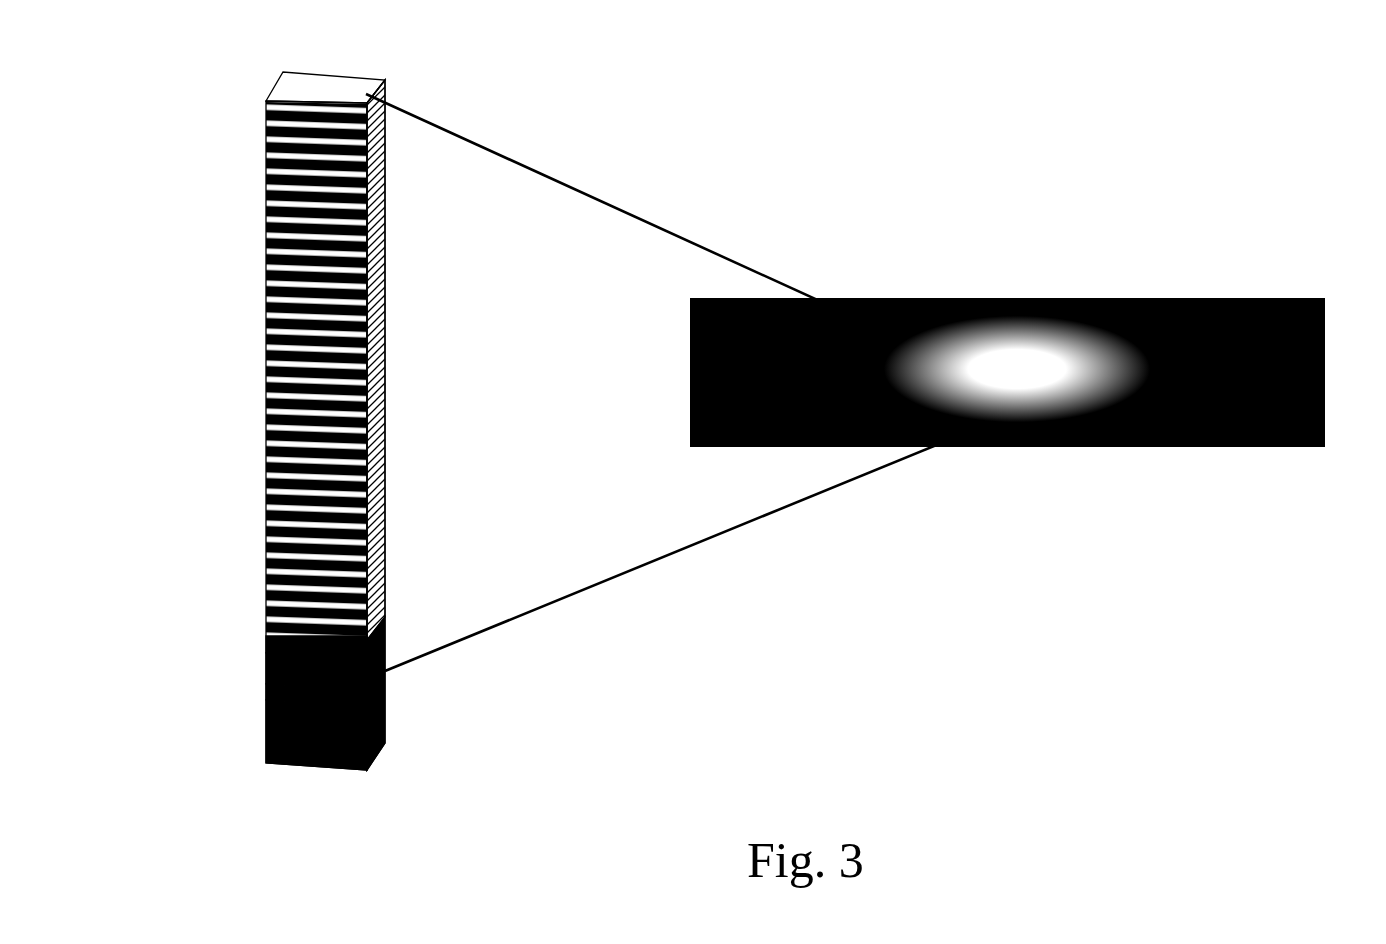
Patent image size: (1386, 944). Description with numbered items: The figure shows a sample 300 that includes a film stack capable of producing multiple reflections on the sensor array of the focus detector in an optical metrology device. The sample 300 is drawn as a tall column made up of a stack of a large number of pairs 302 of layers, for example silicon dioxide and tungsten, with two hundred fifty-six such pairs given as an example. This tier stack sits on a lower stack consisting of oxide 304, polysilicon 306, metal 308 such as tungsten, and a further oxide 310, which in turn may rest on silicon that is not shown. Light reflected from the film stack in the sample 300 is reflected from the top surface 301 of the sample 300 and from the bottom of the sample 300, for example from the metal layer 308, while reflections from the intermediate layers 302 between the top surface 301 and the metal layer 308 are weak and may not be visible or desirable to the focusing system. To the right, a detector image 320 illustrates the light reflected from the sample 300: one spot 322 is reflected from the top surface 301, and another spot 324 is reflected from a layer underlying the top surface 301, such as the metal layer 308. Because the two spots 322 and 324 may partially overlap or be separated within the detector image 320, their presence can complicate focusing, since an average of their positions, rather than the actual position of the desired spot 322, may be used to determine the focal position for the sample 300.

The sample 300 is at (194, 75).
The top surface 301 is at (323, 90).
The pairs of layers 302 is at (265, 202).
The oxide 304 is at (266, 643).
The polysilicon 306 is at (266, 671).
The metal layer 308 is at (266, 694).
The oxide 310 is at (266, 752).
The detector image 320 is at (1032, 331).
The spot 322 is at (965, 342).
The spot 324 is at (1077, 352).